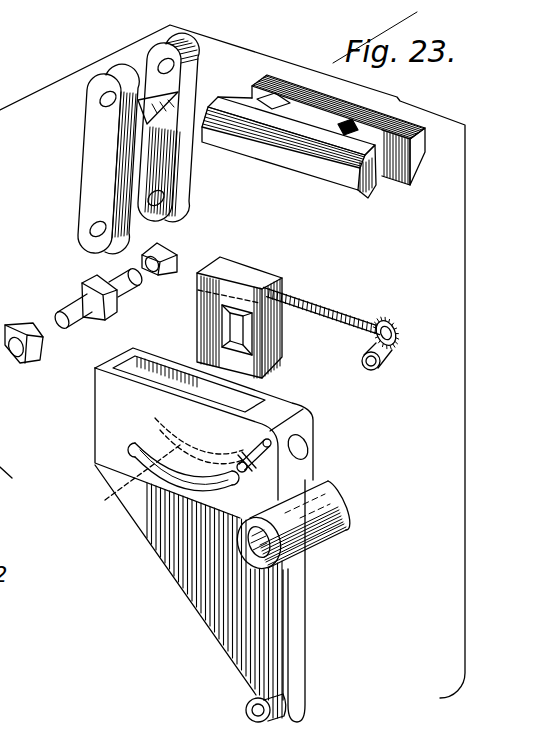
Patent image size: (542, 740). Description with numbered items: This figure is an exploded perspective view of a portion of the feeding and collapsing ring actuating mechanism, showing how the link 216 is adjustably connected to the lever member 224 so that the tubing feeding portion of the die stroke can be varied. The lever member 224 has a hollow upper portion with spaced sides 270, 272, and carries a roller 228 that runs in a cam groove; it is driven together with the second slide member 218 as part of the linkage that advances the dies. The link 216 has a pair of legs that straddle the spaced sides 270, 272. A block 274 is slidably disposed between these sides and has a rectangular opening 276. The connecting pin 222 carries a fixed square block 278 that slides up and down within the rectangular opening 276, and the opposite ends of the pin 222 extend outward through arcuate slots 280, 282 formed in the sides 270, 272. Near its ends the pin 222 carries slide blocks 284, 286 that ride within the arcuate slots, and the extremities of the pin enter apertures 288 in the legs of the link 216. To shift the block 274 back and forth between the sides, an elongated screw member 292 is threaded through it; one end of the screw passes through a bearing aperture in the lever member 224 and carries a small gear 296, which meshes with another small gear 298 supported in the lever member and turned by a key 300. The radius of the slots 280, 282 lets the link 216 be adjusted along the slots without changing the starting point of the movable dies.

The link 216 is at (95, 132).
The second slide member 218 is at (347, 147).
The connecting pin 222 is at (75, 303).
The lever member 224 is at (157, 547).
The roller 228 is at (290, 694).
The side 270 is at (257, 396).
The side 272 is at (143, 380).
The block 274 is at (265, 283).
The rectangular opening 276 is at (237, 338).
The square block 278 is at (110, 312).
The arcuate slot 280 is at (133, 453).
The arcuate slot 282 is at (118, 491).
The slide block 284 is at (175, 250).
The slide block 286 is at (28, 360).
The apertures 288 is at (98, 217).
The elongated screw member 292 is at (347, 288).
The small gear 296 is at (390, 326).
The small gear 298 is at (397, 363).
The key 300 is at (280, 437).